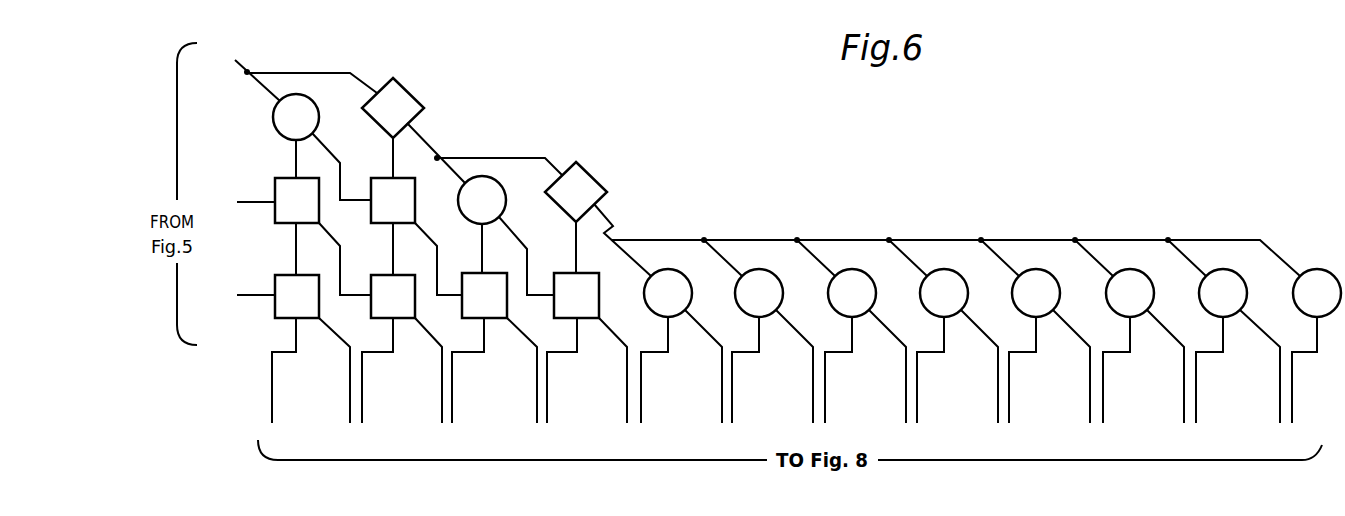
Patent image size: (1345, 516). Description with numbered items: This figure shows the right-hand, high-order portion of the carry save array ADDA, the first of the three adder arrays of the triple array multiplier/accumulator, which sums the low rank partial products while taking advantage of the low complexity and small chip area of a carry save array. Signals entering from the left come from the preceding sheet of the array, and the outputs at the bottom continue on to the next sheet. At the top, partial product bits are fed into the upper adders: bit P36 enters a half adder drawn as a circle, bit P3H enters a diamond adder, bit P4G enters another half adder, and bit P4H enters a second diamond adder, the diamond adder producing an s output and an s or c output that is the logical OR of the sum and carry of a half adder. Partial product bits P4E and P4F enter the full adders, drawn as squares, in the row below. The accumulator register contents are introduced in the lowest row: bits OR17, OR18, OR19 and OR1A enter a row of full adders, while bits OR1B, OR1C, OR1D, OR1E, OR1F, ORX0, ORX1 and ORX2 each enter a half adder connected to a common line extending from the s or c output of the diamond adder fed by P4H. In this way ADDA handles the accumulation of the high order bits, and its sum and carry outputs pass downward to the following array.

The carry save adder array ADDA is at (652, 143).
The partial product bit P36 is at (296, 94).
The partial product bit P3H is at (393, 78).
The partial product bit P4E is at (273, 178).
The partial product bit P4F is at (370, 178).
The partial product bit P4G is at (482, 176).
The partial product bit P4H is at (576, 162).
The accumulator register bit OR17 is at (273, 275).
The accumulator register bit OR18 is at (370, 274).
The accumulator register bit OR19 is at (462, 273).
The accumulator register bit OR1A is at (553, 273).
The accumulator register bit OR1B is at (668, 269).
The accumulator register bit OR1C is at (759, 269).
The accumulator register bit OR1D is at (852, 269).
The accumulator register bit OR1E is at (944, 269).
The accumulator register bit OR1F is at (1036, 269).
The accumulator register bit ORX0 is at (1130, 269).
The accumulator register bit ORX1 is at (1223, 269).
The accumulator register bit ORX2 is at (1317, 269).